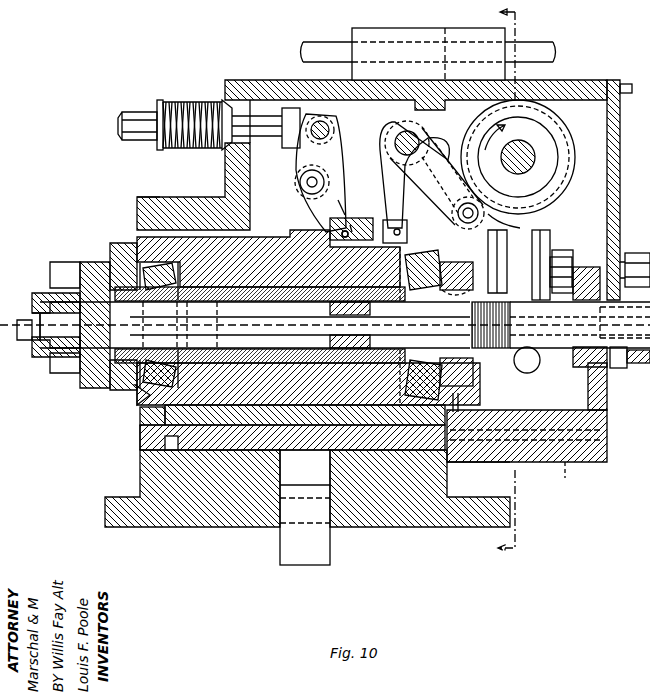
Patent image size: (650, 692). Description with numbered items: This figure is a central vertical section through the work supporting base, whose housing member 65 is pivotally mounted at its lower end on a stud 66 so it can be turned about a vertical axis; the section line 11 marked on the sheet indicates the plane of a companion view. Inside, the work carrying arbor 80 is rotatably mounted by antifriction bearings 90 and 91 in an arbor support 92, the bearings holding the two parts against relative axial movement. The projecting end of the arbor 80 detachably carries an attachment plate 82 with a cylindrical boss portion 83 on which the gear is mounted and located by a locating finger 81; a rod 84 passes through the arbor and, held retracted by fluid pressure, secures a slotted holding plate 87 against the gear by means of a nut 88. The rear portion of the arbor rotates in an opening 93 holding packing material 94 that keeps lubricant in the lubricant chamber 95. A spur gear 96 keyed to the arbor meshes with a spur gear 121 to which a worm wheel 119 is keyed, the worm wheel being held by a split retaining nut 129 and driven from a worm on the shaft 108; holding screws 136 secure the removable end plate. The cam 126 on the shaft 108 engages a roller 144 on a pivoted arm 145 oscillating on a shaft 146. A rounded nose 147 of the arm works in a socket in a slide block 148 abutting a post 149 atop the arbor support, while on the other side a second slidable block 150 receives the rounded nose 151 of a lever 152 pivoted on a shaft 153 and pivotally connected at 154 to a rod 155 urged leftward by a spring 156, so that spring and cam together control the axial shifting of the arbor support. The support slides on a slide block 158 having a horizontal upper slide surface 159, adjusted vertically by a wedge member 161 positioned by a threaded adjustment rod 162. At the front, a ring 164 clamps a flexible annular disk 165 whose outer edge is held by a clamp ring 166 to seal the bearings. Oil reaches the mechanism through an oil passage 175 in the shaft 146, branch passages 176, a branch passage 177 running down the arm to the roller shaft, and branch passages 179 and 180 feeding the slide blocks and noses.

The section line 11 is at (522, 281).
The housing member 65 is at (237, 82).
The stud 66 is at (338, 562).
The work carrying arbor 80 is at (558, 338).
The locating finger 81 is at (77, 262).
The attachment plate 82 is at (139, 212).
The cylindrical boss portion 83 is at (50, 340).
The rod 84 is at (97, 330).
The holding plate 87 is at (22, 340).
The nut 88 is at (24, 320).
The antifriction bearing 90 is at (150, 395).
The antifriction bearing 91 is at (450, 400).
The arbor support 92 is at (270, 390).
The opening 93 is at (595, 353).
The packing material 94 is at (612, 262).
The lubricant chamber 95 is at (553, 397).
The spur gear 96 is at (472, 377).
The shaft 108 is at (535, 162).
The worm wheel 119 is at (561, 257).
The spur gear 121 is at (418, 228).
The cam 126 is at (543, 140).
The split retaining nut 129 is at (547, 262).
The holding screws 136 is at (626, 84).
The roller 144 is at (488, 214).
The pivoted arm 145 is at (446, 186).
The shaft 146 is at (417, 148).
The rounded nose 147 is at (392, 213).
The slide block 148 is at (362, 232).
The post 149 is at (350, 225).
The second slidable block 150 is at (338, 200).
The rounded nose 151 is at (322, 305).
The lever 152 is at (297, 200).
The shaft 153 is at (300, 175).
The pivotal connection 154 is at (318, 122).
The rod 155 is at (262, 116).
The spring 156 is at (178, 104).
The slide block 158 is at (185, 430).
The horizontal upper slide surface 159 is at (220, 407).
The wedge member 161 is at (402, 445).
The threaded adjustment rod 162 is at (525, 462).
The ring 164 is at (140, 383).
The flexible annular disk 165 is at (148, 425).
The clamp ring 166 is at (152, 440).
The oil passage 175 is at (415, 113).
The branch passages 176 is at (407, 140).
The branch passage 177 is at (486, 147).
The branch passage 179 is at (322, 134).
The branch passage 180 is at (330, 219).